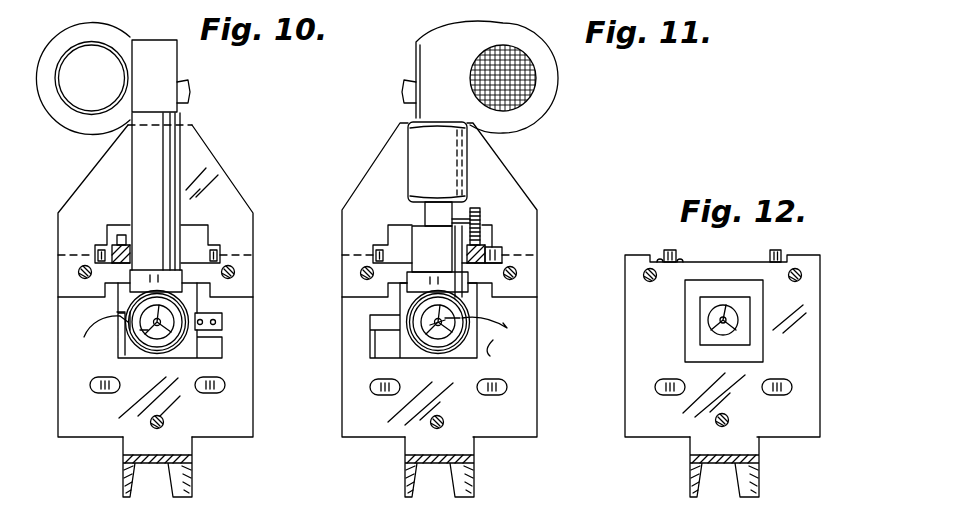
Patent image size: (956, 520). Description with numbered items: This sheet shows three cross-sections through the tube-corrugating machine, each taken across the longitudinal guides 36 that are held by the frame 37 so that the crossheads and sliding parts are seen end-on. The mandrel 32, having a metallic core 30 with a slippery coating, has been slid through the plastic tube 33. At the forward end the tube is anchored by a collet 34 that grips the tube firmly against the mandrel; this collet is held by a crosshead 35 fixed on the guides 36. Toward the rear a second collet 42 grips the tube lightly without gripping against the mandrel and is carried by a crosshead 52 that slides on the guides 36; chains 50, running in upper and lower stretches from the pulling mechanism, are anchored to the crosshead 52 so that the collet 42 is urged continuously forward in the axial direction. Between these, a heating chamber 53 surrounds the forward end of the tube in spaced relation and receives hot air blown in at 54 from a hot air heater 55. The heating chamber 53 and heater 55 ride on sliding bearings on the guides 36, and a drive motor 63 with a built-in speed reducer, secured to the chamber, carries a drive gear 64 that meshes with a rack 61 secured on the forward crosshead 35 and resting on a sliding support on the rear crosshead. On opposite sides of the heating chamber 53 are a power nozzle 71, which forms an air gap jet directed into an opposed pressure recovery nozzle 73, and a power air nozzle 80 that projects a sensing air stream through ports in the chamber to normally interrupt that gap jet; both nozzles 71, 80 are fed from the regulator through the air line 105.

In FIG. 12, the metallic core 30 is at (699, 321).
In FIG. 10, the mandrel 32 is at (152, 328).
In FIG. 11, the mandrel 32 is at (433, 328).
In FIG. 12, the mandrel 32 is at (733, 327).
In FIG. 12, the plastic tube 33 is at (732, 318).
In FIG. 10, the collet 34 is at (148, 330).
In FIG. 10, the crosshead 35 is at (238, 425).
In FIG. 10, the longitudinal guides 36 is at (236, 272).
In FIG. 11, the longitudinal guides 36 is at (517, 273).
In FIG. 12, the longitudinal guides 36 is at (800, 270).
In FIG. 10, the frame 37 is at (192, 475).
In FIG. 11, the frame 37 is at (473, 473).
In FIG. 12, the frame 37 is at (757, 475).
In FIG. 11, the collet 42 is at (437, 323).
In FIG. 12, the collet 42 is at (720, 318).
In FIG. 10, the chains 50 is at (210, 250).
In FIG. 11, the chains 50 is at (382, 243).
In FIG. 12, the chains 50 is at (780, 395).
In FIG. 11, the crosshead 52 is at (520, 420).
In FIG. 12, the crosshead 52 is at (635, 358).
In FIG. 10, the heating chamber 53 is at (182, 345).
In FIG. 11, the heating chamber 53 is at (405, 308).
In FIG. 10, the hot air inlet 54 is at (138, 175).
In FIG. 10, the hot air heater 55 is at (72, 100).
In FIG. 11, the hot air heater 55 is at (542, 100).
In FIG. 10, the rack 61 is at (121, 234).
In FIG. 11, the rack 61 is at (496, 247).
In FIG. 11, the drive motor 63 is at (422, 143).
In FIG. 11, the drive gear 64 is at (479, 218).
In FIG. 10, the power nozzle 71 is at (218, 322).
In FIG. 10, the pressure recovery nozzle 73 is at (201, 318).
In FIG. 10, the power air nozzle 80 is at (117, 312).
In FIG. 11, the power air nozzle 80 is at (445, 318).
In FIG. 10, the air line 105 is at (96, 339).
In FIG. 11, the air line 105 is at (495, 342).